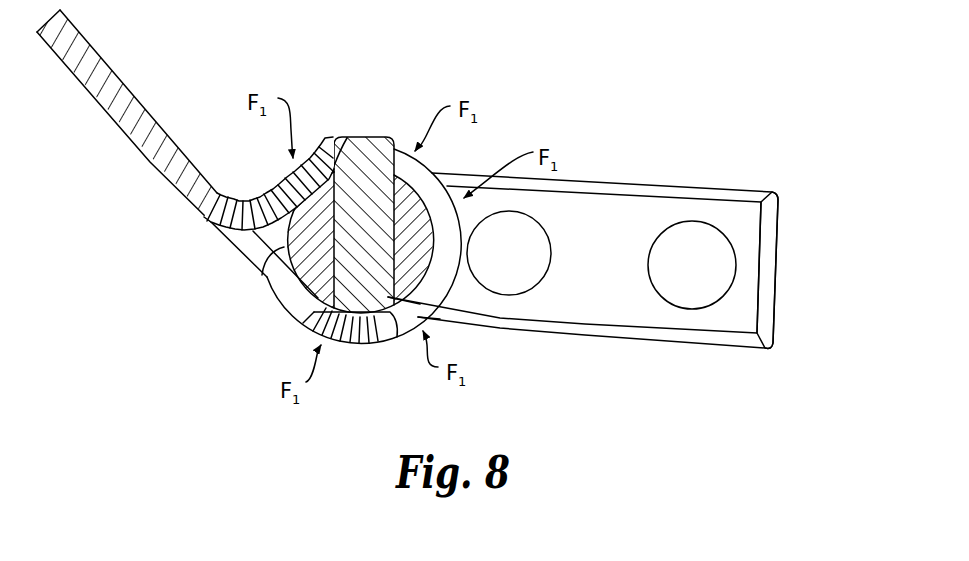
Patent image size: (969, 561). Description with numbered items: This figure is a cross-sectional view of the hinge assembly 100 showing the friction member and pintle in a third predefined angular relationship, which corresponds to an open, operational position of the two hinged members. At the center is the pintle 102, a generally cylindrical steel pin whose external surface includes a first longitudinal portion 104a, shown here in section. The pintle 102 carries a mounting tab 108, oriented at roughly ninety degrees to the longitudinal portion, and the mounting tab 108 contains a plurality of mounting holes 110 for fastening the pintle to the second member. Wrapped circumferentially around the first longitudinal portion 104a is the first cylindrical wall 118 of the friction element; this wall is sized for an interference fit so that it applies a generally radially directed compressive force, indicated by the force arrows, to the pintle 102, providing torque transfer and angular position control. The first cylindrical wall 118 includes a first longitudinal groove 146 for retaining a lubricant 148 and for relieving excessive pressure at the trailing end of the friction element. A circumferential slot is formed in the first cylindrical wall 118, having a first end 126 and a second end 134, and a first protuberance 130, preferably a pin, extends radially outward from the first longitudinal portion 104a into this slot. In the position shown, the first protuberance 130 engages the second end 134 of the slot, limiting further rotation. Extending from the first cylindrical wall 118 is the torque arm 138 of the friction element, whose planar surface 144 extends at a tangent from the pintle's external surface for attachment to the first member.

The hinge assembly 100 is at (638, 387).
The pintle 102 is at (658, 176).
The first longitudinal portion 104a is at (258, 279).
The mounting tab 108 is at (780, 192).
The mounting holes 110 is at (529, 266).
The first cylindrical wall 118 is at (430, 168).
The first end 126 is at (403, 333).
The first protuberance 130 is at (362, 136).
The second end 134 is at (348, 137).
The torque arm 138 is at (147, 164).
The planar surface 144 is at (137, 103).
The first longitudinal groove 146 is at (392, 298).
The lubricant 148 is at (400, 298).